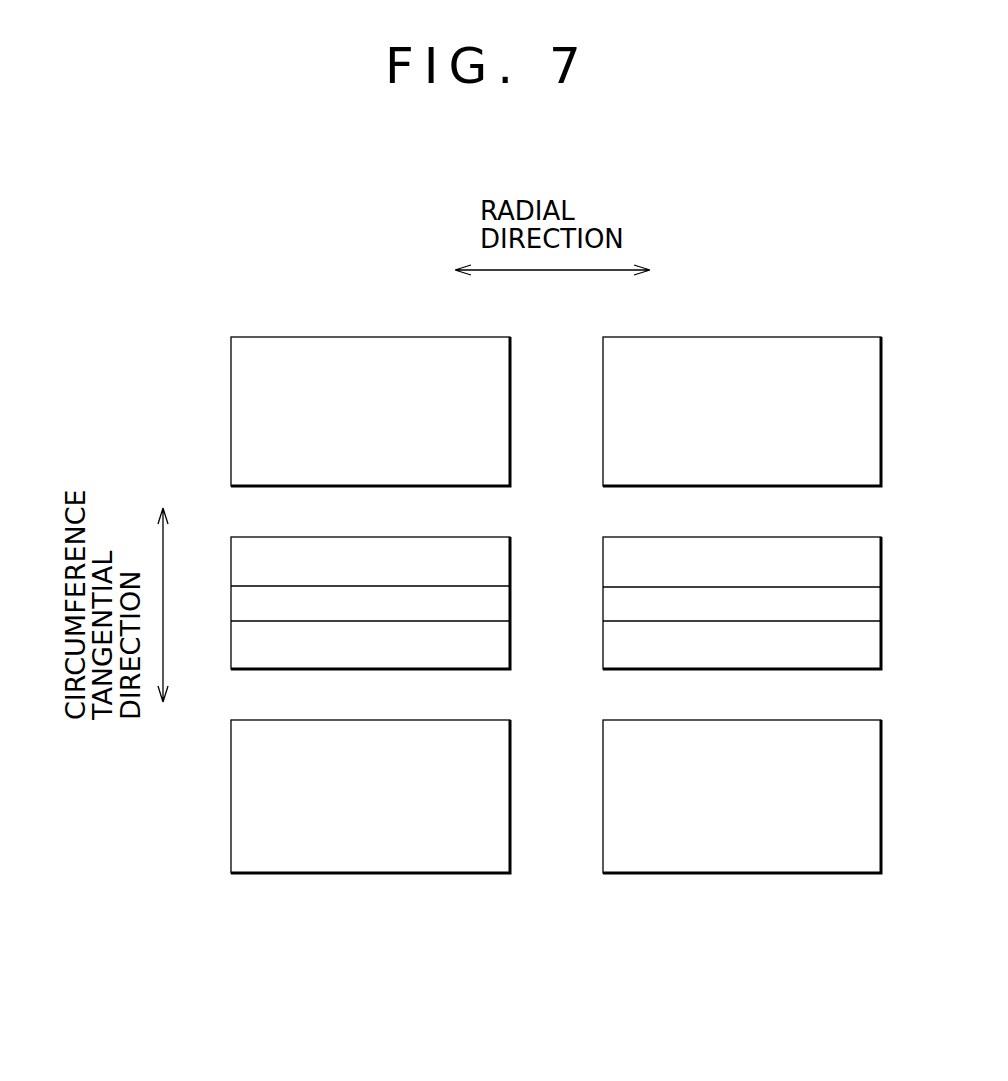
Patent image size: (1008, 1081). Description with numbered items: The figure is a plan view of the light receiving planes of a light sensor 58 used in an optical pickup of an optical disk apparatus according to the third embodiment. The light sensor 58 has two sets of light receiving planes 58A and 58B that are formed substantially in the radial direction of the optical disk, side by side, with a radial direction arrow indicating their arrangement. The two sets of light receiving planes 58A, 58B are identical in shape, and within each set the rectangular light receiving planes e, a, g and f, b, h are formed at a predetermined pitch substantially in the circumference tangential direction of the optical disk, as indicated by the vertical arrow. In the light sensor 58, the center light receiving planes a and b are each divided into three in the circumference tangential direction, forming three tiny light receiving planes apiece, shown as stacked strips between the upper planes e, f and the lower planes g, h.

The light sensor 58 is at (556, 610).
The light receiving planes 58A is at (324, 274).
The light receiving planes 58B is at (783, 275).